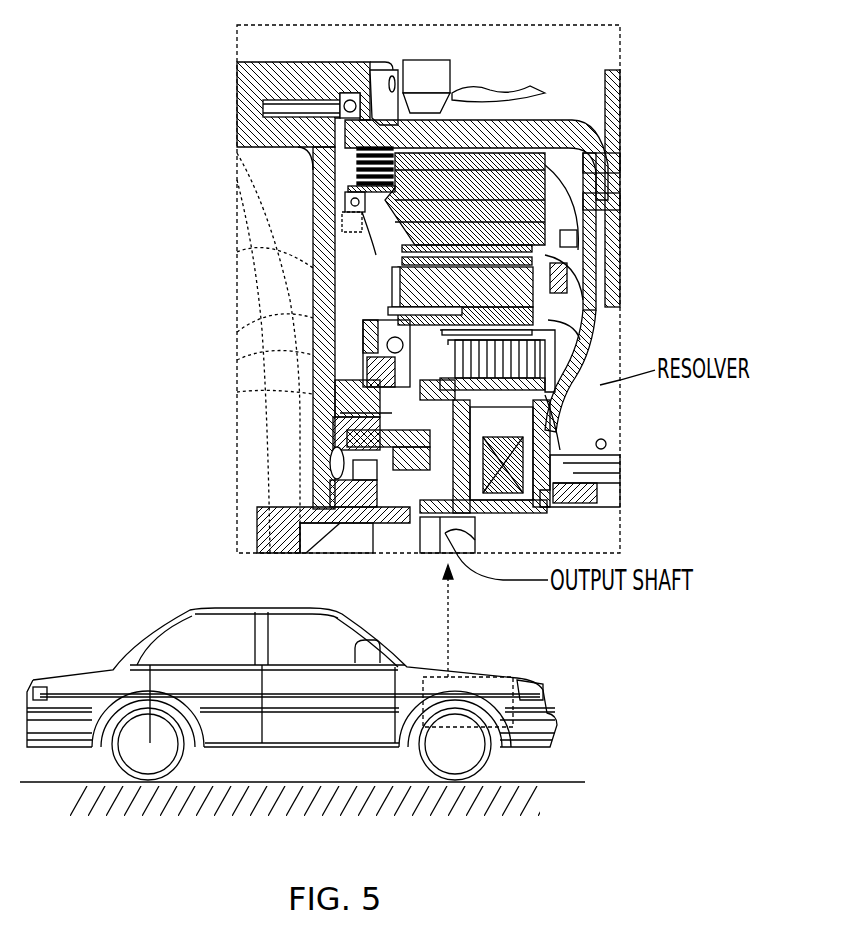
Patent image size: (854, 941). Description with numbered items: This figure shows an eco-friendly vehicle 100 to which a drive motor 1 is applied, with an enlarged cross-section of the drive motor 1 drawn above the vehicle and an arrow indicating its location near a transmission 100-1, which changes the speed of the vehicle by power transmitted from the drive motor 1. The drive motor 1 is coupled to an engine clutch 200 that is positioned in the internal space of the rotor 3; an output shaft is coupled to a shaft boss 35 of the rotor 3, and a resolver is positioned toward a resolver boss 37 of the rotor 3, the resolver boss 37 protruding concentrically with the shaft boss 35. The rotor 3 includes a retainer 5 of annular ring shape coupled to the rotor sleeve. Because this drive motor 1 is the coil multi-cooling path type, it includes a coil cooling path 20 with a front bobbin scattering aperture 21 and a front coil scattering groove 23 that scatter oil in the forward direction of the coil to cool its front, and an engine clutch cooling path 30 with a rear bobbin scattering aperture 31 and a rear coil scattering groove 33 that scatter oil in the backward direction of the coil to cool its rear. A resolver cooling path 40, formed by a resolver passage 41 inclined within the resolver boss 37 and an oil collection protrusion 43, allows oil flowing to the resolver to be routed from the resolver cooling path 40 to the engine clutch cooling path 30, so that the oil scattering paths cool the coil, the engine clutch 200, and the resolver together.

The drive motor 1 is at (447, 123).
The rotor 3 is at (313, 410).
The retainer 5 is at (598, 196).
The coil cooling path 20 is at (554, 287).
The front bobbin scattering aperture 21 is at (588, 318).
The front coil scattering groove 23 is at (578, 292).
The engine clutch cooling path 30 is at (347, 246).
The rear bobbin scattering aperture 31 is at (392, 300).
The rear coil scattering groove 33 is at (385, 248).
The shaft boss 35 is at (553, 460).
The resolver boss 37 is at (290, 548).
The resolver cooling path 40 is at (280, 364).
The resolver passage 41 is at (377, 390).
The oil collection protrusion 43 is at (395, 335).
The engine clutch 200 is at (563, 400).
The eco-friendly vehicle 100 is at (130, 652).
The transmission 100-1 is at (515, 697).